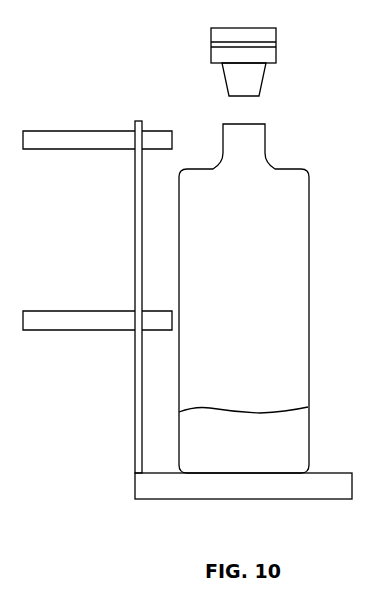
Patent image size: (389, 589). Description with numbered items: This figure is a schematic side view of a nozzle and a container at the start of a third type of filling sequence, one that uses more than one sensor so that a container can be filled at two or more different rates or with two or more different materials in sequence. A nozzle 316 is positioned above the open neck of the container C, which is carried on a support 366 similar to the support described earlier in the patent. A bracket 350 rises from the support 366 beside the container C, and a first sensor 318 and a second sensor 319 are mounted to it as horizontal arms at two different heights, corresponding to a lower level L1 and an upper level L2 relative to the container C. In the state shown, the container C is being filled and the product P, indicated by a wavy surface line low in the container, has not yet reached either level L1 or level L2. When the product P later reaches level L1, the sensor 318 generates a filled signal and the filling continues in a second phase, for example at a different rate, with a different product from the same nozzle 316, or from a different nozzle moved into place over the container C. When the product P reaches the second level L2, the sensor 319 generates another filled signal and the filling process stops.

The nozzle 316 is at (255, 86).
The first sensor 318 is at (97, 327).
The second sensor 319 is at (107, 147).
The bracket 350 is at (135, 412).
The support 366 is at (227, 492).
The container C is at (291, 168).
The product P is at (288, 409).
The first level L1 is at (315, 344).
The second level L2 is at (315, 185).